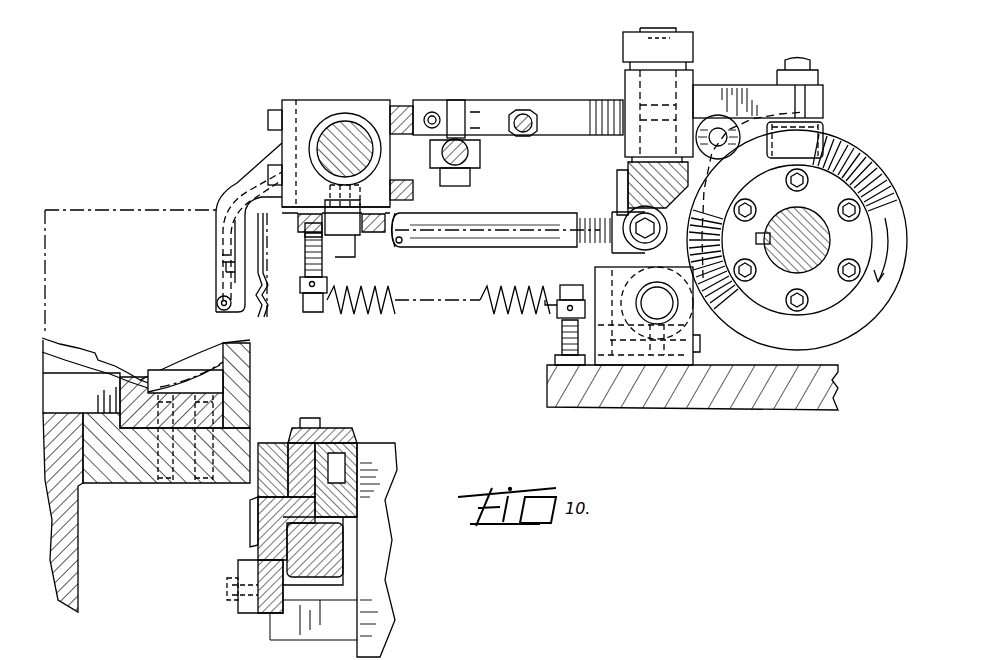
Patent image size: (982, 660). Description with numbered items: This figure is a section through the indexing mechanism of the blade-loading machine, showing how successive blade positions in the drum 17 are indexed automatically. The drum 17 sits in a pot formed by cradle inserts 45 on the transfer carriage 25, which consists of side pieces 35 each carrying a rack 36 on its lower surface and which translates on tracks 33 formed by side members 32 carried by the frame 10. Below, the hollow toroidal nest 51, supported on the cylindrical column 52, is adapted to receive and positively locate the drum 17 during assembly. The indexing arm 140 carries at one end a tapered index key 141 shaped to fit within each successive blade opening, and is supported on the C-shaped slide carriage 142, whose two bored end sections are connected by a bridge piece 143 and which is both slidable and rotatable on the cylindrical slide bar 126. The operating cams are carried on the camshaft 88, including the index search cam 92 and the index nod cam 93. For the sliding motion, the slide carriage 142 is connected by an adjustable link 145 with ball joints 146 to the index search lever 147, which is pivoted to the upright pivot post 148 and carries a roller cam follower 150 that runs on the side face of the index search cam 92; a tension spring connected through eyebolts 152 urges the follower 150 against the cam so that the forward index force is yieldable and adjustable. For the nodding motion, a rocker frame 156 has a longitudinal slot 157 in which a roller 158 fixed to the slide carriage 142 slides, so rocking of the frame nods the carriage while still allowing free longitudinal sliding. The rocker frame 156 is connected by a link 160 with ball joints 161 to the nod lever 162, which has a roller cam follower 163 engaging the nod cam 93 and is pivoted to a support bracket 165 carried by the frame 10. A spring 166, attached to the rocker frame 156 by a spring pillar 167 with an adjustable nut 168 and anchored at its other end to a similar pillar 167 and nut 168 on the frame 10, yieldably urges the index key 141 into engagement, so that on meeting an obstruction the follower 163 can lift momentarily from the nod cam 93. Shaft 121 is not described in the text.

The frame 10 is at (586, 417).
The drum 17 is at (135, 210).
The transfer carriage 25 is at (258, 550).
The side members 32 is at (397, 476).
The tracks 33 is at (365, 447).
The side pieces 35 is at (268, 518).
The rack 36 is at (340, 560).
The cradle inserts 45 is at (262, 443).
The nest 51 is at (172, 360).
The cylindrical column 52 is at (80, 552).
The camshaft 88 is at (815, 268).
The index search cam 92 is at (866, 160).
The index nod cam 93 is at (735, 188).
The shaft 121 is at (630, 172).
The slide bar 126 is at (335, 147).
The indexing arm 140 is at (216, 262).
The index key 141 is at (240, 300).
The slide carriage 142 is at (332, 100).
The bridge piece 143 is at (402, 106).
The adjustable link 145 is at (470, 168).
The ball joints 146 is at (470, 152).
The index search lever 147 is at (575, 100).
The pivot post 148 is at (648, 28).
The roller cam follower 150 is at (824, 142).
The eyebolts 152 is at (520, 108).
The rocker frame 156 is at (402, 247).
The longitudinal slot 157 is at (390, 226).
The roller 158 is at (340, 248).
The link 160 is at (500, 248).
The ball joints 161 is at (622, 214).
The nod lever 162 is at (746, 237).
The roller cam follower 163 is at (748, 127).
The support bracket 165 is at (618, 272).
The spring 166 is at (478, 305).
The spring pillar 167 is at (304, 250).
The adjustable nut 168 is at (318, 306).